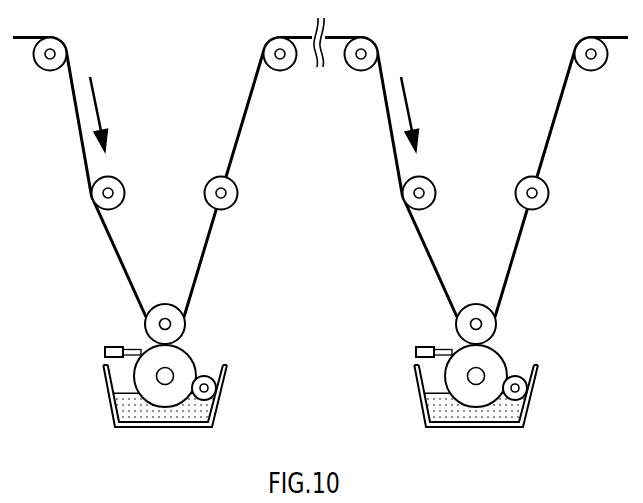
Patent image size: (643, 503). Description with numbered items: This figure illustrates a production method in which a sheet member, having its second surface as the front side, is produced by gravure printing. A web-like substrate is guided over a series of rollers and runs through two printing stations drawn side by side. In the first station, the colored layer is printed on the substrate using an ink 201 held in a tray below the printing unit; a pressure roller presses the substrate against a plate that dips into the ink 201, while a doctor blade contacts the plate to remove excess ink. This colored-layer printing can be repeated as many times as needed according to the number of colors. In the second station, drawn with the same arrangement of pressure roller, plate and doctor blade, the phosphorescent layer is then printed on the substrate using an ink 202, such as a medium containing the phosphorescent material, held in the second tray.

The ink 201 is at (116, 405).
The ink 202 is at (439, 396).